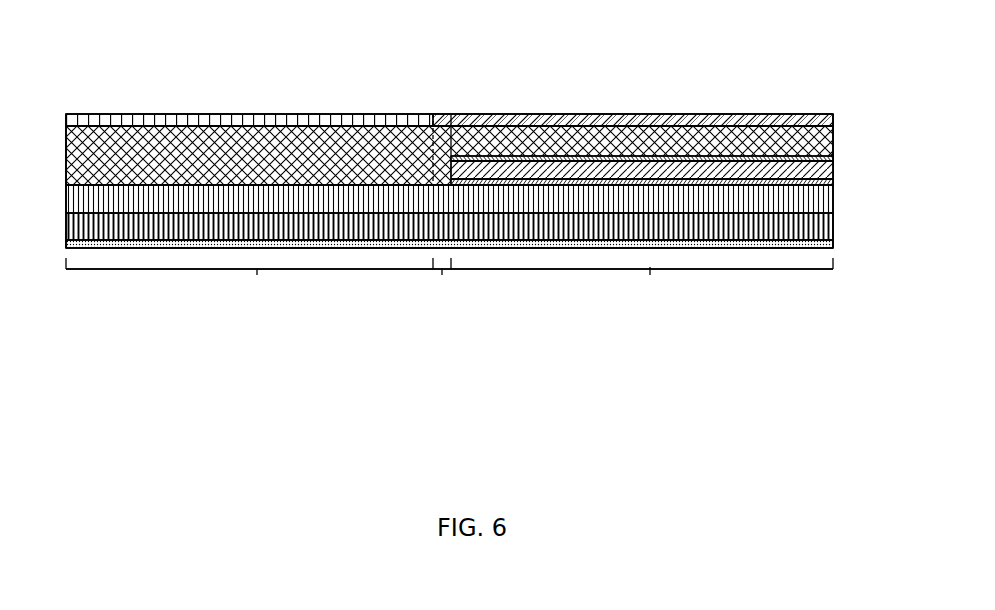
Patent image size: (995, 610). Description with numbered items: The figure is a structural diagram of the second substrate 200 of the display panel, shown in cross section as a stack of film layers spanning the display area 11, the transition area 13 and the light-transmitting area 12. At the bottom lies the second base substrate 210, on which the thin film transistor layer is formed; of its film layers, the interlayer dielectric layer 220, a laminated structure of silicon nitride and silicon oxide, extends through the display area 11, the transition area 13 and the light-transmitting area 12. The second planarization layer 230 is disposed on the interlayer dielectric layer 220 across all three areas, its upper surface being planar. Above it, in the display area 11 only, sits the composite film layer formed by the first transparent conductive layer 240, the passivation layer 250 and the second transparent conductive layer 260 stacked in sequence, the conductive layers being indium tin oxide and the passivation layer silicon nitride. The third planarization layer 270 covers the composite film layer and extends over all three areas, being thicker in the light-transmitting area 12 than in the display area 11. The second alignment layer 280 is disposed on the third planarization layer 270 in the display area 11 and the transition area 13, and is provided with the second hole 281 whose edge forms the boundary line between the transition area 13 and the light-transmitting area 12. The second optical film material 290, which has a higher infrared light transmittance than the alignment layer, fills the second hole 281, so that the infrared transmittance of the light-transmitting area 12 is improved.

The second substrate 200 is at (469, 334).
The second base substrate 210 is at (834, 242).
The interlayer dielectric layer 220 is at (834, 228).
The second planarization layer 230 is at (834, 198).
The first transparent conductive layer 240 is at (834, 185).
The passivation layer 250 is at (834, 167).
The second transparent conductive layer 260 is at (834, 157).
The third planarization layer 270 is at (834, 137).
The second alignment layer 280 is at (682, 120).
The second hole 281 is at (432, 117).
The second optical film material 290 is at (246, 122).
The display area 11 is at (642, 286).
The light-transmitting area 12 is at (249, 287).
The transition area 13 is at (444, 287).